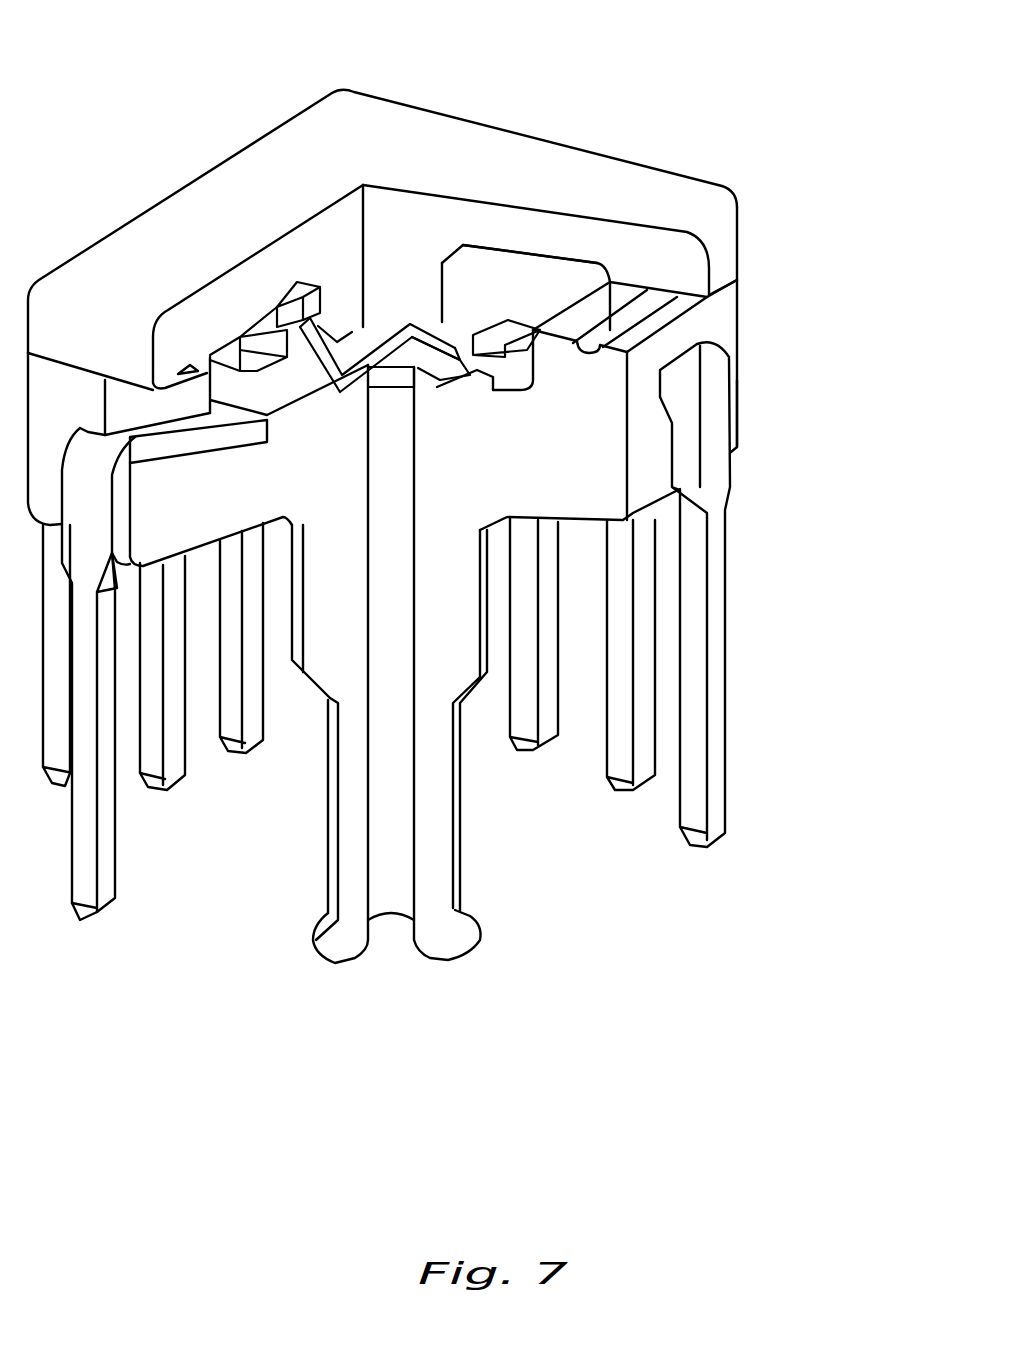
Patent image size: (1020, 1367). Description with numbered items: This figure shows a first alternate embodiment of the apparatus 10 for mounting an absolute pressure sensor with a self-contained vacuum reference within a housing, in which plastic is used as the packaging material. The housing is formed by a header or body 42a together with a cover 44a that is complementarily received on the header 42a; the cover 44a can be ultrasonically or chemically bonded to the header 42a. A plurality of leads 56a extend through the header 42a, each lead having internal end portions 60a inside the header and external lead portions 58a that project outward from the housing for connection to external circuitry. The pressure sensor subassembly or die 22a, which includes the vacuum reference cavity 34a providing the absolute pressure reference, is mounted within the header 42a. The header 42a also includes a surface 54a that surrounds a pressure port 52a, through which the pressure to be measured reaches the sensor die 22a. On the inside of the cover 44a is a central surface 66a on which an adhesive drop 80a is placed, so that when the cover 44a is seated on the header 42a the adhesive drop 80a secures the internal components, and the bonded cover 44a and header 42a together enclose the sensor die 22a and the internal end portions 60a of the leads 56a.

The apparatus 10 is at (640, 252).
The pressure sensor subassembly or die 22a is at (428, 378).
The vacuum reference cavity 34a is at (418, 390).
The header or body 42a is at (742, 323).
The cover 44a is at (387, 97).
The pressure port 52a is at (383, 388).
The surface 54a is at (420, 383).
The leads 56a is at (738, 410).
The external lead portions 58a is at (727, 690).
The internal end portions 60a is at (515, 327).
The central surface 66a is at (400, 322).
The adhesive drop 80a is at (367, 325).